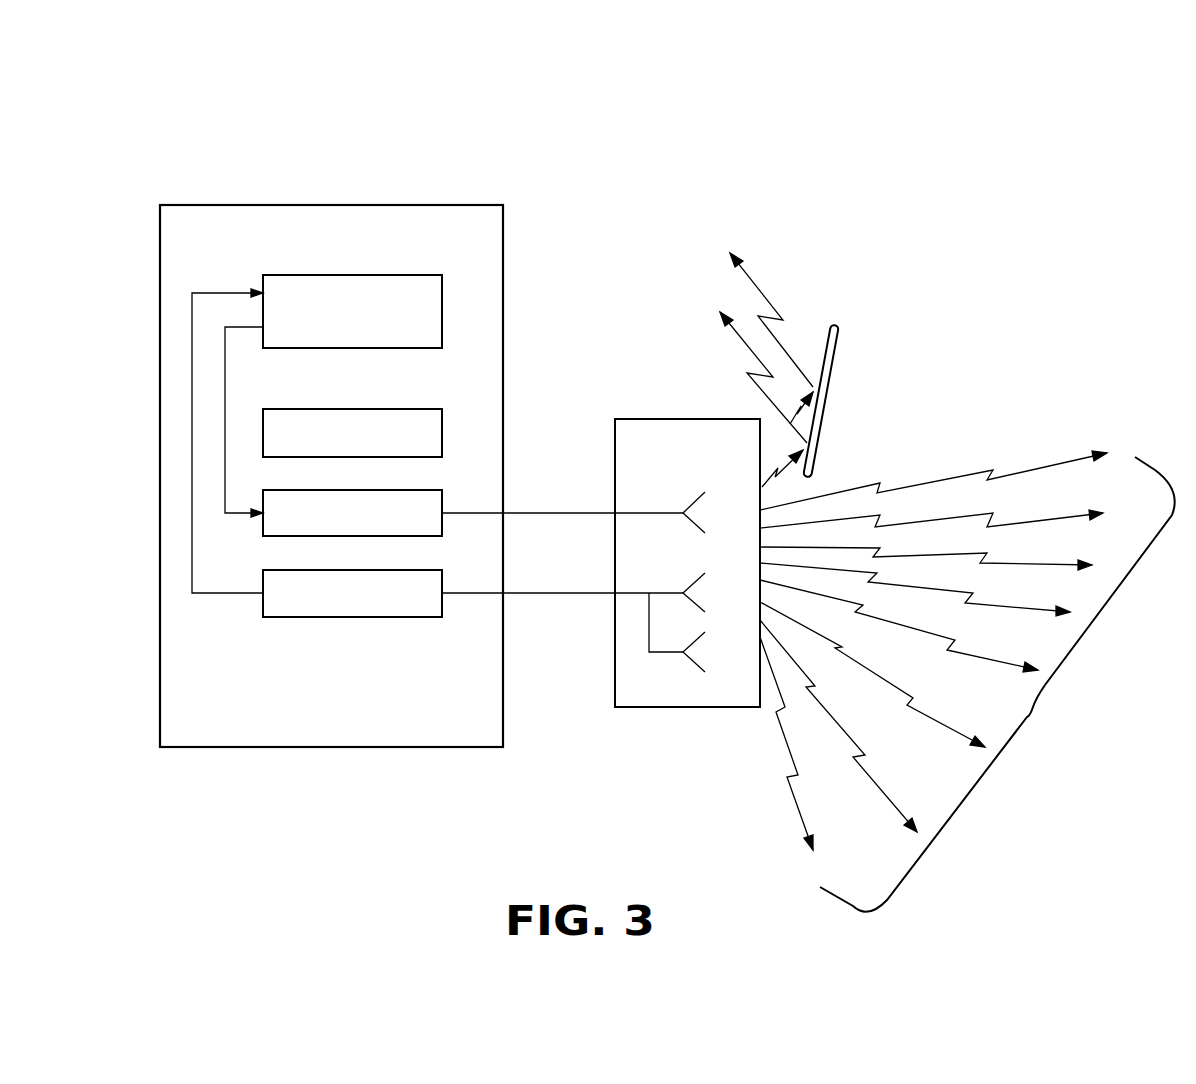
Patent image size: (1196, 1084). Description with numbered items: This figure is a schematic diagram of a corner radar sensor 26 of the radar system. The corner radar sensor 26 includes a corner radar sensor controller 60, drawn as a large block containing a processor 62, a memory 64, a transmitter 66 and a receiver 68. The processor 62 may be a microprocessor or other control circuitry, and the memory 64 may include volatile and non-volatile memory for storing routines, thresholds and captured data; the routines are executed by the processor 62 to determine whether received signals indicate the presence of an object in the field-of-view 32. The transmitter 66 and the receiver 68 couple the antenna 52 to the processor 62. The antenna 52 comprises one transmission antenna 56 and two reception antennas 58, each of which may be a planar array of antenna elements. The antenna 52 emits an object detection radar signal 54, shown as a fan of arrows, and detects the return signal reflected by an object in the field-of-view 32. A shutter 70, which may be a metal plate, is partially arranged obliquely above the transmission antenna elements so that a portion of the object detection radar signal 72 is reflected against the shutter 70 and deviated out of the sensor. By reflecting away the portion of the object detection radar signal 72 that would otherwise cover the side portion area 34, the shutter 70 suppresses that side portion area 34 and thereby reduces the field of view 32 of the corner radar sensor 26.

The corner radar sensor 26 is at (303, 160).
The corner radar sensor controller 60 is at (417, 203).
The processor 62 is at (443, 300).
The memory 64 is at (443, 423).
The transmitter 66 is at (443, 502).
The receiver 68 is at (443, 605).
The antenna 52 is at (654, 718).
The transmission antenna 56 is at (647, 513).
The reception antennas 58 is at (627, 593).
The portion of the object detection radar signal 72 is at (790, 478).
The object detection radar signal 54 is at (877, 790).
The side portion area of the field of view 34 is at (760, 461).
The shutter 70 is at (853, 337).
The field-of-view 32 is at (1040, 712).